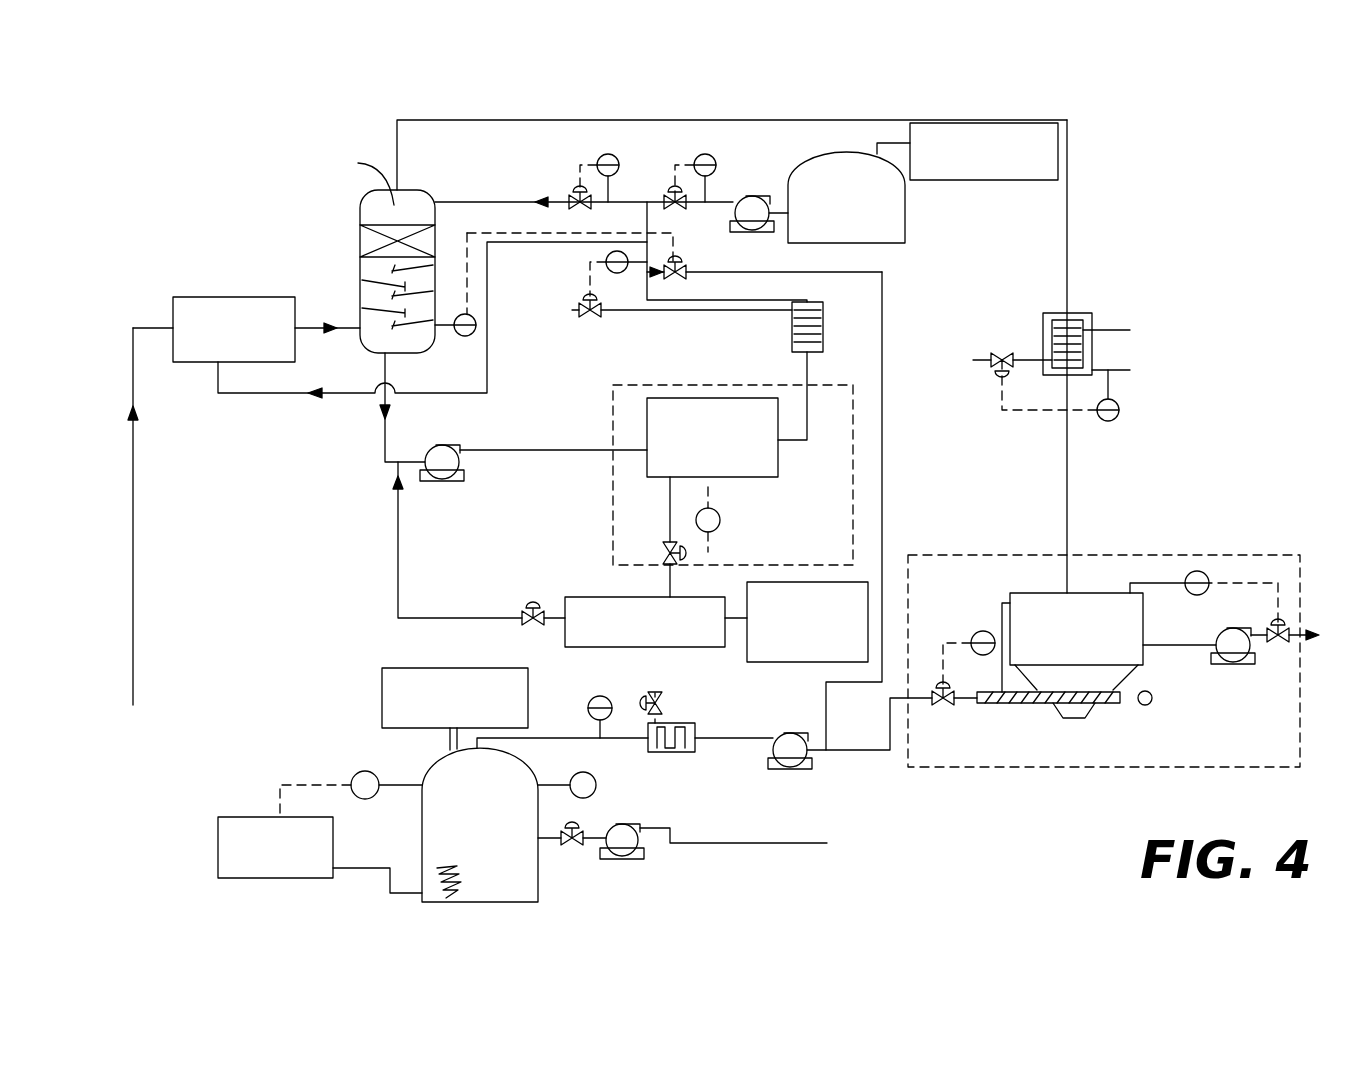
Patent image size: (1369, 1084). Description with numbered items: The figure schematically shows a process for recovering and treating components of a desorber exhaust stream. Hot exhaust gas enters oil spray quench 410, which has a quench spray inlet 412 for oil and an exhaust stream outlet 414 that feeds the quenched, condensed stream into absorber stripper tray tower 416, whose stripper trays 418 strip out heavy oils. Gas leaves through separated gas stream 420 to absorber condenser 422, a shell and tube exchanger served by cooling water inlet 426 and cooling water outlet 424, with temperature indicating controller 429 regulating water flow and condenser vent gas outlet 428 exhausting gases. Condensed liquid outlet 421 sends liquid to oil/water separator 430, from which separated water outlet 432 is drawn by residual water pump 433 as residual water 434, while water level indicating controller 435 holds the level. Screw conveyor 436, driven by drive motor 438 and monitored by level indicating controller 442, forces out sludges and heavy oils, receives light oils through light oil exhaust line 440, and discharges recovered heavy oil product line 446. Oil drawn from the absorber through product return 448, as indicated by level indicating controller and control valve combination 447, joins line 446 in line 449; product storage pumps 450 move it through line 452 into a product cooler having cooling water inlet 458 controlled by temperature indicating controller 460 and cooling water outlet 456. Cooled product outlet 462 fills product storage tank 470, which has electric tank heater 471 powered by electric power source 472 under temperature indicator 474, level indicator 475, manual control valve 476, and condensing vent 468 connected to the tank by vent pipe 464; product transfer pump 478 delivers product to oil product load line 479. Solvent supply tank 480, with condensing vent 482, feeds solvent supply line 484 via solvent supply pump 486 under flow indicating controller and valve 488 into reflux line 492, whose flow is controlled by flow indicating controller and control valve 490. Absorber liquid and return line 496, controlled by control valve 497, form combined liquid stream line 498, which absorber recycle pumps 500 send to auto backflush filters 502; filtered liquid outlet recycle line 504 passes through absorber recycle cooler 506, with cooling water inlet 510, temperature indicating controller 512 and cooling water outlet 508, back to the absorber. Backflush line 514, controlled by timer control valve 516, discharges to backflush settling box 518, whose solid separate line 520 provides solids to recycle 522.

The oil spray quench 410 is at (238, 296).
The quench spray inlet 412 is at (280, 395).
The exhaust stream outlet 414 is at (318, 326).
The absorber stripper tray tower 416 is at (360, 262).
The stripper trays 418 is at (366, 306).
The separated gas stream 420 is at (462, 119).
The condensed liquid outlet 421 is at (1068, 478).
The absorber condenser 422 is at (1078, 313).
The cooling water outlet 424 is at (1130, 330).
The cooling water inlet 426 is at (1000, 350).
The condenser vent gas outlet 428 is at (1130, 370).
The temperature indicating controller 429 is at (1119, 403).
The oil/water separator 430 is at (1090, 593).
The separated water outlet 432 is at (1150, 646).
The residual water pump 433 is at (1256, 666).
The residual water 434 is at (1312, 620).
The water level indicating controller 435 is at (1278, 612).
The screw conveyor outlet 436 is at (1023, 704).
The drive motor 438 is at (1152, 698).
The light oil exhaust line 440 is at (1002, 600).
The level indicating controller 442 is at (980, 631).
The recovered heavy oil product line 446 is at (890, 745).
The level indicating controller and control valve combination 447 is at (675, 260).
The product return 448 is at (882, 525).
The storage line 449 is at (822, 740).
The product storage pumps 450 is at (793, 735).
The product line 452 is at (712, 740).
The cooling water outlet 456 is at (690, 752).
The cooling water inlet 458 is at (648, 695).
The temperature indicating controller 460 is at (598, 696).
The cooled product outlet 462 is at (583, 737).
The vent pipe 464 is at (450, 740).
The condensing vent 468 is at (381, 692).
The product storage tank 470 is at (513, 902).
The electric tank heater 471 is at (447, 902).
The electric power source 472 is at (240, 817).
The temperature indicator 474 is at (362, 771).
The level indicator 475 is at (583, 772).
The manual control valve 476 is at (583, 830).
The product transfer pump 478 is at (645, 855).
The oil product load line 479 is at (728, 846).
The solvent supply tank 480 is at (905, 228).
The condensing vent 482 is at (992, 183).
The solvent supply line 484 is at (779, 210).
The solvent supply pump 486 is at (745, 196).
The flow indicating controller and valve 488 is at (701, 155).
The flow indicating controller and control valve 490 is at (603, 155).
The recycle flow (reflux) line 492 is at (488, 200).
The return line 496 is at (398, 564).
The control valve 497 is at (525, 622).
The combined liquid stream line 498 is at (437, 447).
The absorber recycle pumps 500 is at (462, 450).
The auto backflush filters 502 is at (647, 410).
The filtered liquid outlet recycle line 504 is at (882, 375).
The absorber recycle cooler 506 is at (823, 310).
The cooling water outlet 508 is at (823, 344).
The cooling water inlet 510 is at (613, 292).
The temperature indicating controller 512 is at (605, 262).
The backflush line 514 is at (668, 503).
The timer control valve 516 is at (662, 553).
The backflush settling box 518 is at (565, 640).
The solid separate line 520 is at (740, 612).
The recycle 522 is at (868, 582).